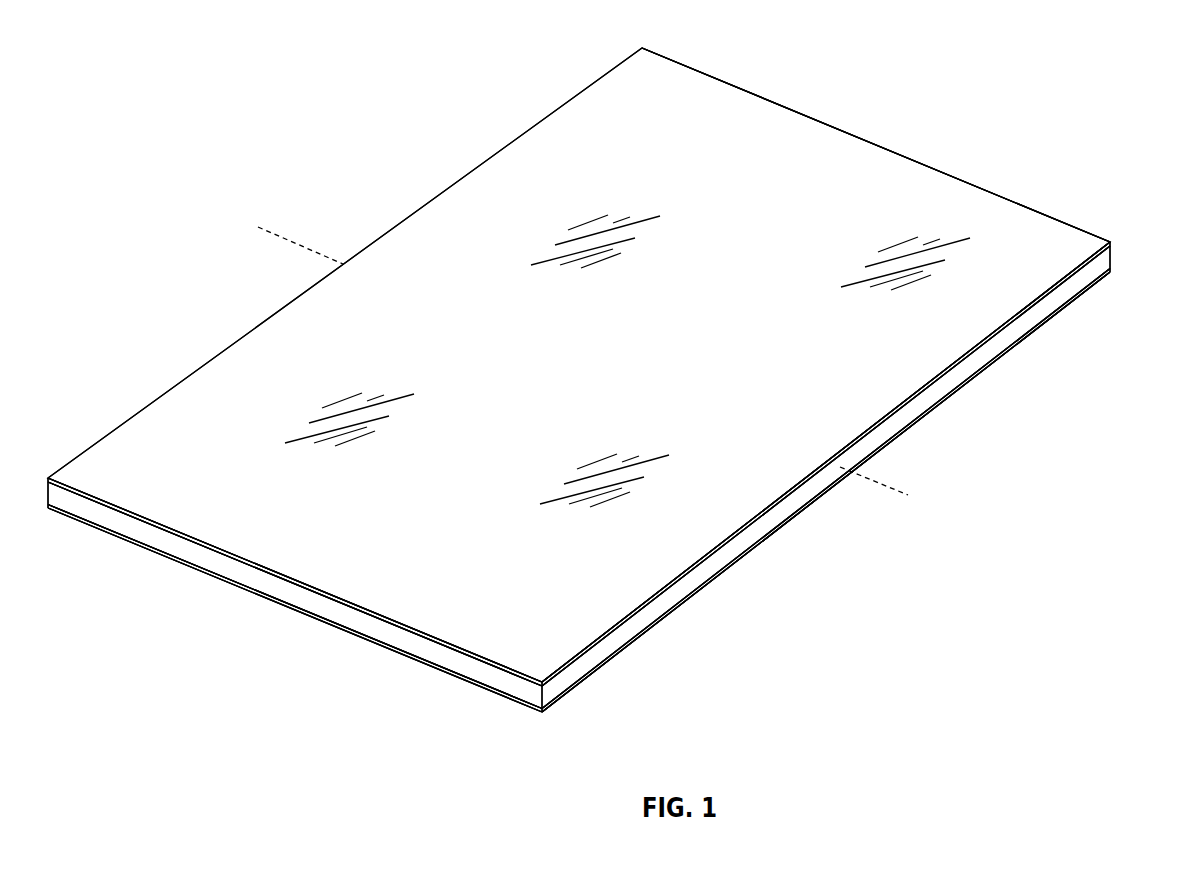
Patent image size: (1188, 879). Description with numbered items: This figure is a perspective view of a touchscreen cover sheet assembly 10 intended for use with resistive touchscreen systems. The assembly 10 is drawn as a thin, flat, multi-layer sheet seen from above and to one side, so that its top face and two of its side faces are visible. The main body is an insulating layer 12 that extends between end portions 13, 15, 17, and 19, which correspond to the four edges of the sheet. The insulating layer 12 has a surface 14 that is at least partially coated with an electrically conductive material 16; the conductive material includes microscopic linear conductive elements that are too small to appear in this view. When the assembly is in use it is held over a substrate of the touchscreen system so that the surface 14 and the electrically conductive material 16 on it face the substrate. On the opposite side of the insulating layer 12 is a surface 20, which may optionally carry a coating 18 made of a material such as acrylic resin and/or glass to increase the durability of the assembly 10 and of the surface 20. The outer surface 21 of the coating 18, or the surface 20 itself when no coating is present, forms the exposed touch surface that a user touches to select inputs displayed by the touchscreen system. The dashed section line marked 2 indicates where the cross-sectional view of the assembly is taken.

The touchscreen cover sheet assembly 10 is at (611, 370).
The end portion 13 is at (420, 165).
The end portion 19 is at (830, 112).
The surface of the coating 21 is at (923, 180).
The surface 20 is at (1048, 292).
The coating 18 is at (1110, 240).
The insulating layer 12 is at (1105, 262).
The electrically conductive material 16 is at (893, 442).
The surface 14 is at (750, 550).
The end portion 15 is at (667, 660).
The end portion 17 is at (272, 642).
The section line 2- 2 is at (258, 227).